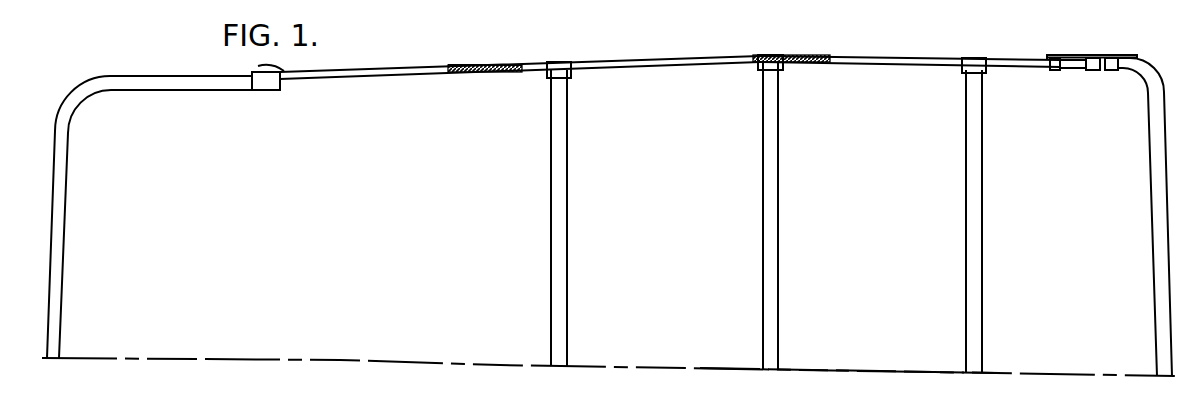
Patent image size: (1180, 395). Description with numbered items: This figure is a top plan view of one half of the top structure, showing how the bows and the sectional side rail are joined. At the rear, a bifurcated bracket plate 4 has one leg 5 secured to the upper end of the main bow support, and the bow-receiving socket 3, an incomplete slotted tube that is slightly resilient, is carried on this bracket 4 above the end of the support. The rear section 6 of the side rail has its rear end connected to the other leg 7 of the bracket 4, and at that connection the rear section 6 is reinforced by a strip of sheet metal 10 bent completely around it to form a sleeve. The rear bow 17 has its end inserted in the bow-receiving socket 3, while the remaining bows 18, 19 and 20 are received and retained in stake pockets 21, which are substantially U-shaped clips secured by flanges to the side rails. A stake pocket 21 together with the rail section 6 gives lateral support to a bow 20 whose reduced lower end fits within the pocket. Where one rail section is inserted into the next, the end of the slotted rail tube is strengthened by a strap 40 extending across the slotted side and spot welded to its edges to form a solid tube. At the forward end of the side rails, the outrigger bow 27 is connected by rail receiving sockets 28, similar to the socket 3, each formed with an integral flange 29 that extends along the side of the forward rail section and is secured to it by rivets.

The bow-receiving socket 3 is at (1112, 72).
The bifurcated bracket plate 4 is at (307, 98).
The leg of bracket plate 5 is at (482, 94).
The rear section of side rail 6 is at (562, 62).
The leg of bracket plate 7 is at (1058, 59).
The sheet metal strip 10 is at (1054, 72).
The rear bow 17 is at (1161, 148).
The bow 18 is at (969, 161).
The bow 19 is at (850, 381).
The bow 20 is at (611, 376).
The stake pocket 21 is at (572, 74).
The outrigger bow 27 is at (189, 88).
The rail receiving socket 28 is at (262, 92).
The integral flange 29 is at (255, 62).
The strap 40 is at (482, 65).